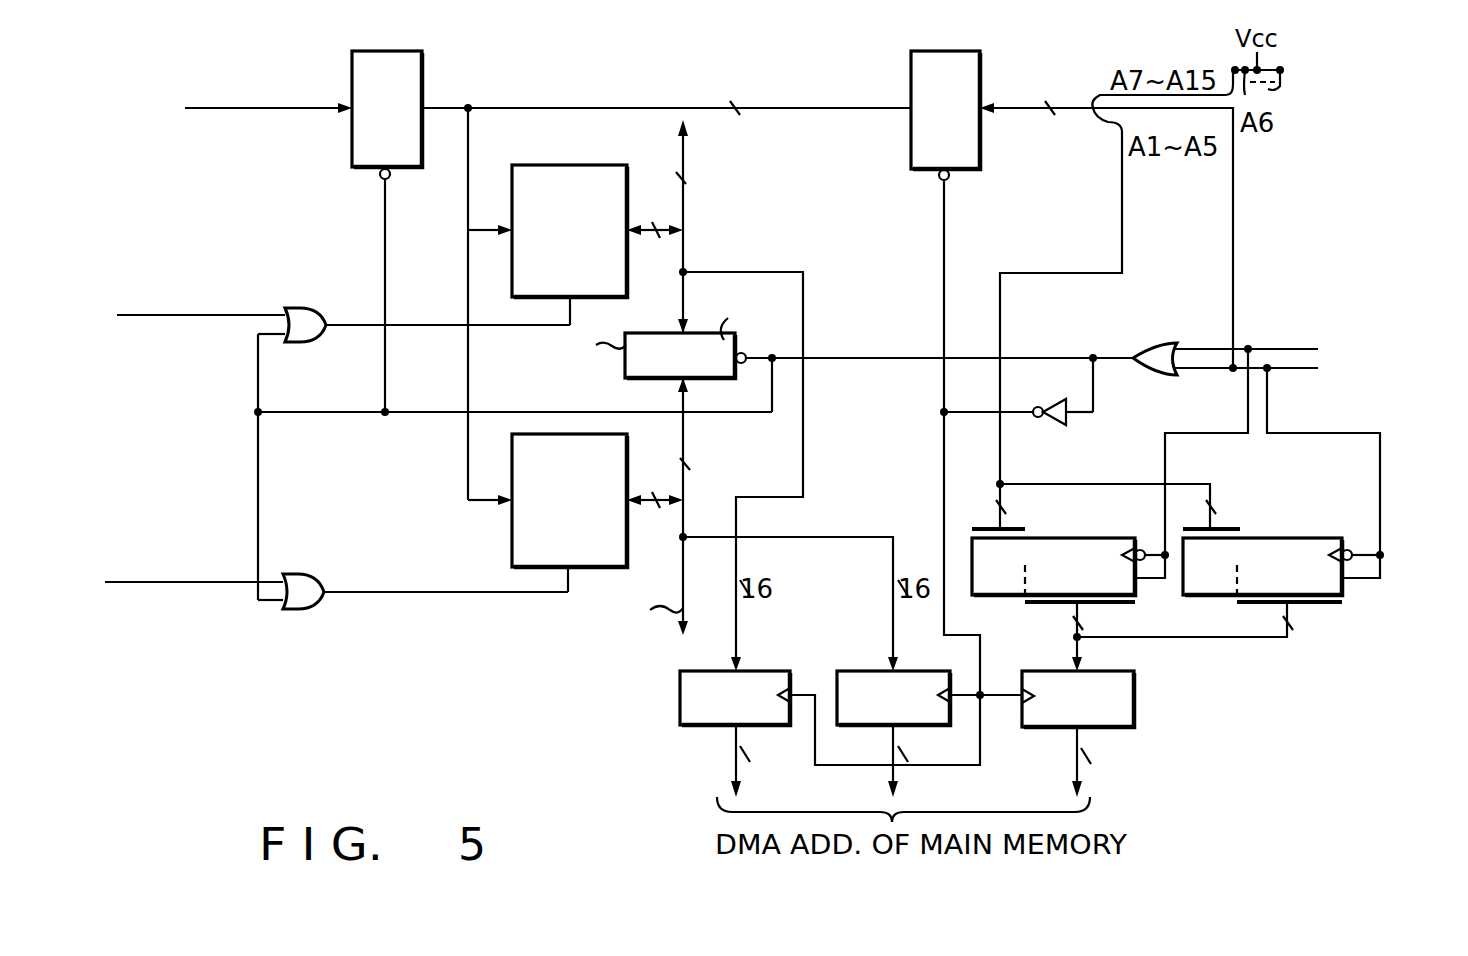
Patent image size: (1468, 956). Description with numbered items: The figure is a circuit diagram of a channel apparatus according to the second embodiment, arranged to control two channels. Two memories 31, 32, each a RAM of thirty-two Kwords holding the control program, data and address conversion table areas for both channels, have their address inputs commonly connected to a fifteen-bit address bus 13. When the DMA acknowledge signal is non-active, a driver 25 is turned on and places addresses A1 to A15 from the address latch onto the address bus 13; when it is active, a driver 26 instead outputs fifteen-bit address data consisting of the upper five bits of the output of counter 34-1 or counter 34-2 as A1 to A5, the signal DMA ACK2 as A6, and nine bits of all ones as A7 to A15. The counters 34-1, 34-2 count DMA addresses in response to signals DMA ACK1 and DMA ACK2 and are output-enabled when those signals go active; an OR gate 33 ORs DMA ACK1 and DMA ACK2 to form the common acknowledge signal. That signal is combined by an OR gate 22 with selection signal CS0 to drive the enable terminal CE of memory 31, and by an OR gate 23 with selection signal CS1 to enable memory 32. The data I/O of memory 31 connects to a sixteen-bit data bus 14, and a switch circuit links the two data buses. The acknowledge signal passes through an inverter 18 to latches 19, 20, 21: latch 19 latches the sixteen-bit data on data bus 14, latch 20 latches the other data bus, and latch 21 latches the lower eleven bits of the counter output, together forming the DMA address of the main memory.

The address bus 13 is at (648, 108).
The data bus 14 is at (686, 200).
The inverter 18 is at (1055, 430).
The latch 19 is at (680, 720).
The latch 20 is at (862, 671).
The latch 21 is at (1122, 718).
The OR gate 22 is at (315, 316).
The OR gate 23 is at (318, 584).
The driver 25 is at (356, 160).
The driver 26 is at (916, 153).
The memory 31 is at (572, 186).
The memory 32 is at (514, 548).
The OR gate 33 is at (1158, 350).
The counter 34-1 is at (1112, 546).
The counter 34-2 is at (1322, 546).